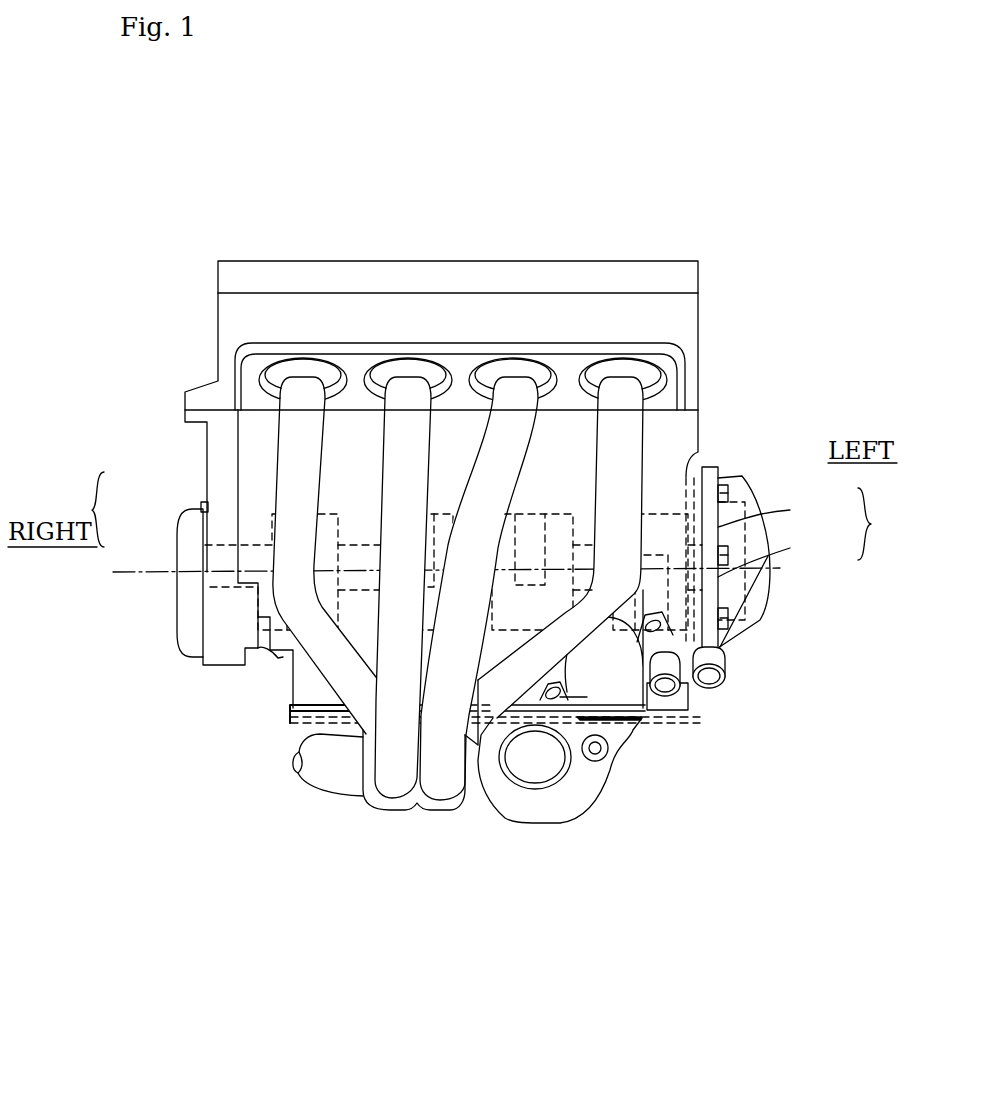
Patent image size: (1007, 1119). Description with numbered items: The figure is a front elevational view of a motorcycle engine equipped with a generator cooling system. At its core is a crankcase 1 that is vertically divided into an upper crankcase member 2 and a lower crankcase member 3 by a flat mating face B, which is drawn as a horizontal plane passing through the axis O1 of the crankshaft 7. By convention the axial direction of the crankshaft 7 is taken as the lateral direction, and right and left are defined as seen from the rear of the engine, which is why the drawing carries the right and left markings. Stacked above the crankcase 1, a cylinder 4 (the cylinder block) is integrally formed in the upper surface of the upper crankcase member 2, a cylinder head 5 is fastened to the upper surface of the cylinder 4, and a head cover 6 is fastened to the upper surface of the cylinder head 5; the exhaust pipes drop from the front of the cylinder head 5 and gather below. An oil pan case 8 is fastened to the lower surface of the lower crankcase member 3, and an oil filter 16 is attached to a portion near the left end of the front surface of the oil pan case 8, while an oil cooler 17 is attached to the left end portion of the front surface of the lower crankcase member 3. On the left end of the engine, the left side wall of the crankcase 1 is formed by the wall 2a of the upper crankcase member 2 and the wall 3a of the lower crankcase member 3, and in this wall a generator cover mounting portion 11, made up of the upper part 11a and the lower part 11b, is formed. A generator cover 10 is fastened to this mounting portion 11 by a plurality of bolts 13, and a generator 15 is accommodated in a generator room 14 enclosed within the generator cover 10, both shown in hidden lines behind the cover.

The crankcase 1 is at (88, 509).
The upper crankcase member 2 is at (243, 524).
The left side wall of upper crankcase member 2a is at (722, 465).
The lower crankcase member 3 is at (302, 668).
The left side wall of lower crankcase member 3a is at (724, 653).
The cylinder 4 is at (696, 419).
The cylinder head 5 is at (696, 335).
The head cover 6 is at (696, 275).
The crankshaft 7 is at (260, 545).
The oil pan case 8 is at (297, 724).
The generator cover 10 is at (762, 590).
The generator cover mounting portion 11 is at (881, 524).
The generator cover mounting portion of upper crankcase member 11a is at (790, 510).
The generator cover mounting portion of lower crankcase member 11b is at (790, 548).
The bolts 13 is at (730, 493).
The generator room 14 is at (753, 598).
The generator 15 is at (757, 626).
The oil filter 16 is at (538, 768).
The oil cooler 17 is at (614, 672).
The mating face B is at (529, 582).
The axis of crankshaft O1 is at (130, 574).